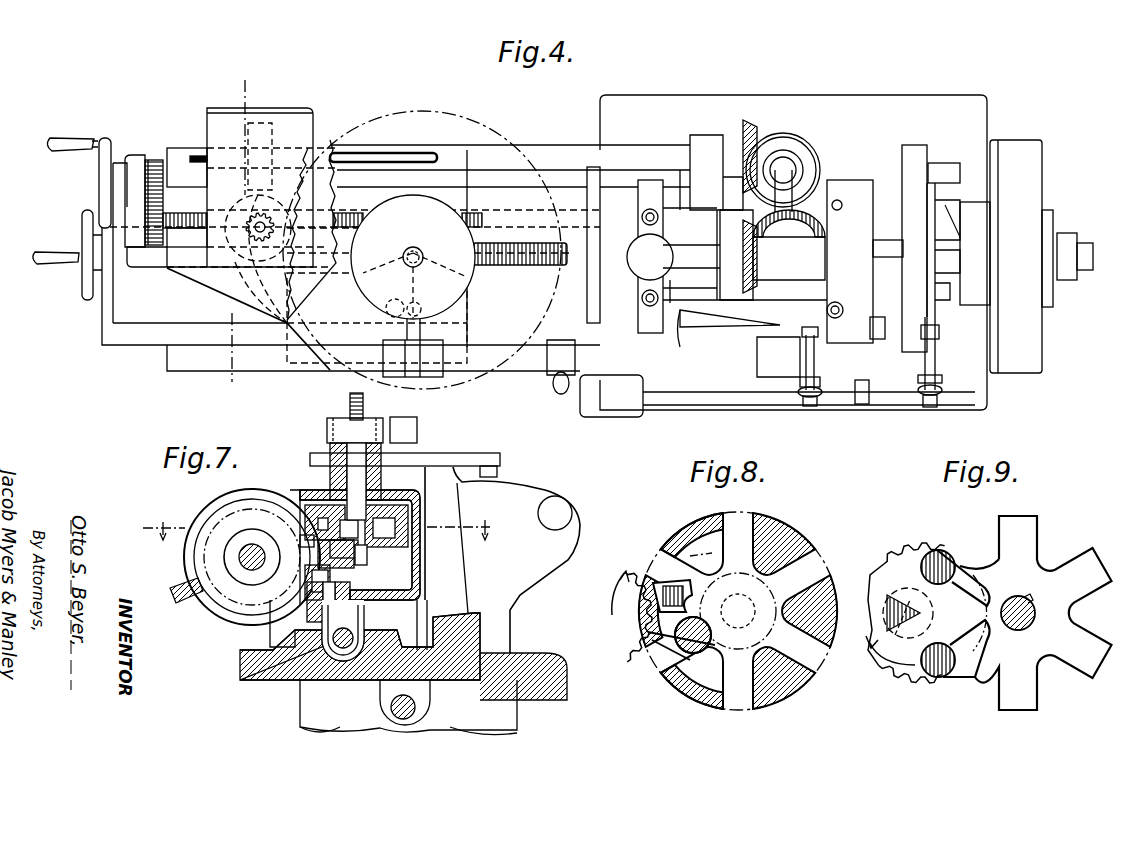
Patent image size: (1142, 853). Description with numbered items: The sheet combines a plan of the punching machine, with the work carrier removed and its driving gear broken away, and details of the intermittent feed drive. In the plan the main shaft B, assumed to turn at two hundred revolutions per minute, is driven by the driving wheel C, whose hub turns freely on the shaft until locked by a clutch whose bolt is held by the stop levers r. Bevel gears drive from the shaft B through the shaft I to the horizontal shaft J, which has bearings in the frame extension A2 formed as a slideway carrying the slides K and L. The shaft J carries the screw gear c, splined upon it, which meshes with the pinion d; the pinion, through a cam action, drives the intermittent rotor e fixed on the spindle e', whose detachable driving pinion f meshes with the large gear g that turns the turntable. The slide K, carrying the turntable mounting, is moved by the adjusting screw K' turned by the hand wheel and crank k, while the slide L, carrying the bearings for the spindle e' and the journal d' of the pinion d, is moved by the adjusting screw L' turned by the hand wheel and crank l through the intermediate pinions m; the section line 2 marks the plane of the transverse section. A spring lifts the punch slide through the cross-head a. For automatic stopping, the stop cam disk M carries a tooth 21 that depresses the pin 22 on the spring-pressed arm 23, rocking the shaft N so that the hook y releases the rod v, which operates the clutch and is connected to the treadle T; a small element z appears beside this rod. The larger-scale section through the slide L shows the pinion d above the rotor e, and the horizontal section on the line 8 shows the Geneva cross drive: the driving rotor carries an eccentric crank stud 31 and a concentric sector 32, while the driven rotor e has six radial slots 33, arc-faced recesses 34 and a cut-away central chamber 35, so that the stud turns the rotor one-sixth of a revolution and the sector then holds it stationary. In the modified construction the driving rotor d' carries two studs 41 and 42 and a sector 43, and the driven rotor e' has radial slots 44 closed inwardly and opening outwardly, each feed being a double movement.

In FIG. 4, the frame extension A2 is at (160, 348).
In FIG. 4, the hand wheel and crank l is at (79, 183).
In FIG. 4, the hand wheel and crank k is at (67, 255).
In FIG. 4, the intermediate pinions m is at (152, 160).
In FIG. 4, the slide L is at (355, 185).
In FIG. 7, the slide L is at (256, 628).
In FIG. 4, the screw gear c is at (272, 126).
In FIG. 7, the screw gear c is at (225, 575).
In FIG. 4, the section line 2 is at (241, 241).
In FIG. 4, the pinion d is at (254, 224).
In FIG. 7, the pinion d is at (345, 563).
In FIG. 8, the pinion d is at (626, 616).
In FIG. 4, the driving pinion f is at (258, 272).
In FIG. 4, the large gear g is at (307, 231).
In FIG. 4, the intermittent rotor e is at (248, 319).
In FIG. 7, the intermittent rotor e is at (353, 559).
In FIG. 8, the intermittent rotor e is at (738, 605).
In FIG. 4, the shaft J is at (548, 155).
In FIG. 7, the shaft J is at (250, 557).
In FIG. 4, the slide K is at (441, 252).
In FIG. 7, the slide K is at (410, 583).
In FIG. 4, the adjusting screw L' is at (424, 213).
In FIG. 7, the adjusting screw L' is at (356, 630).
In FIG. 4, the adjusting screw K' is at (520, 268).
In FIG. 7, the adjusting screw K' is at (408, 707).
In FIG. 4, the stop cam disk M is at (352, 287).
In FIG. 7, the stop cam disk M is at (460, 455).
In FIG. 4, the tooth 21 is at (386, 308).
In FIG. 7, the tooth 21 is at (498, 471).
In FIG. 4, the pin 22 is at (421, 306).
In FIG. 4, the arm 23 is at (406, 333).
In FIG. 4, the cross-head a is at (638, 277).
In FIG. 4, the shaft I is at (787, 180).
In FIG. 4, the main shaft B is at (772, 255).
In FIG. 4, the stop levers r is at (958, 210).
In FIG. 4, the driving wheel C is at (1026, 256).
In FIG. 4, the hook y is at (920, 368).
In FIG. 4, the rod v is at (937, 356).
In FIG. 4, the nut z is at (938, 385).
In FIG. 4, the treadle T is at (611, 396).
In FIG. 4, the shaft N is at (673, 360).
In FIG. 7, the section line 8 is at (313, 530).
In FIG. 7, the spindle e' is at (360, 456).
In FIG. 9, the spindle e' is at (1024, 611).
In FIG. 7, the journal d' is at (311, 596).
In FIG. 9, the journal d' is at (927, 600).
In FIG. 7, the crank stud 31 is at (348, 545).
In FIG. 8, the crank stud 31 is at (715, 645).
In FIG. 7, the sector 32 is at (300, 540).
In FIG. 8, the sector 32 is at (678, 590).
In FIG. 8, the radial slots 33 is at (783, 582).
In FIG. 7, the recesses 34 is at (385, 545).
In FIG. 8, the recesses 34 is at (692, 611).
In FIG. 8, the central chamber 35 is at (749, 612).
In FIG. 9, the stud 41 is at (935, 678).
In FIG. 9, the stud 42 is at (938, 552).
In FIG. 9, the sector 43 is at (886, 643).
In FIG. 9, the radial slots 44 is at (1017, 699).